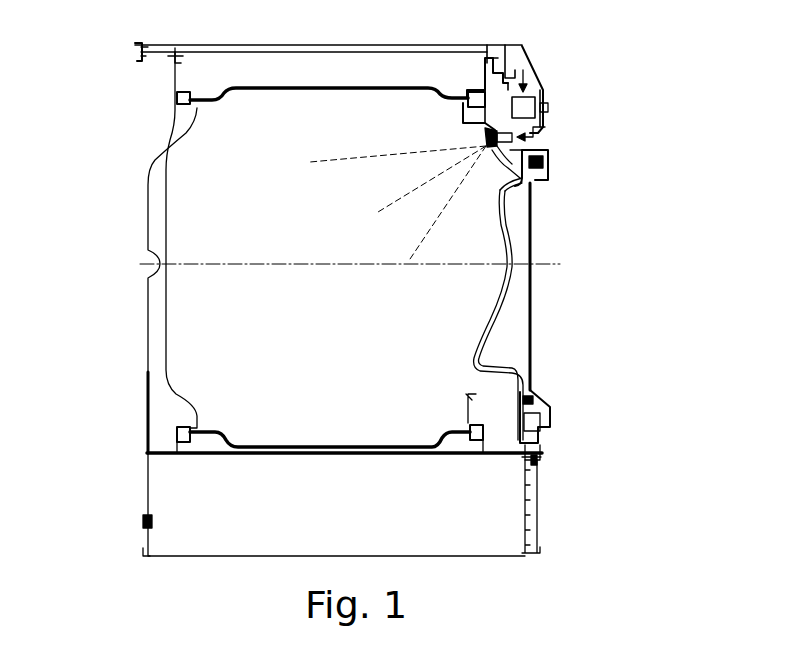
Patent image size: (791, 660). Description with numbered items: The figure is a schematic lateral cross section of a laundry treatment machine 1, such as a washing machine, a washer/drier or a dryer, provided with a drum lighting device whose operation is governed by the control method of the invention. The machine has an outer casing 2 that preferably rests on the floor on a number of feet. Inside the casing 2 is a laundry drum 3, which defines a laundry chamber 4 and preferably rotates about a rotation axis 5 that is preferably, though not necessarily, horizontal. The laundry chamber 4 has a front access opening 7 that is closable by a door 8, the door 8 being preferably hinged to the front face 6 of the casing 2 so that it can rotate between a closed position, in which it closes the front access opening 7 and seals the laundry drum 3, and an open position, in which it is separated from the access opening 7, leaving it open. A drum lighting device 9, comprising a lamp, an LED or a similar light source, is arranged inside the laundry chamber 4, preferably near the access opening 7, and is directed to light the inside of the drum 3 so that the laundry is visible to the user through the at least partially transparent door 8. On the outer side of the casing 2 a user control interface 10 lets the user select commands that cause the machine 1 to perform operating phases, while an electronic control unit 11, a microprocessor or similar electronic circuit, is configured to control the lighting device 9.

The laundry treatment machine 1 is at (583, 212).
The outer casing 2 is at (178, 142).
The laundry drum 3 is at (307, 90).
The laundry chamber 4 is at (327, 90).
The rotation axis 5 is at (359, 267).
The front face 6 is at (552, 418).
The front access opening 7 is at (543, 187).
The door 8 is at (512, 233).
The drum lighting device 9 is at (547, 157).
The user control interface 10 is at (535, 77).
The electronic control unit 11 is at (547, 107).